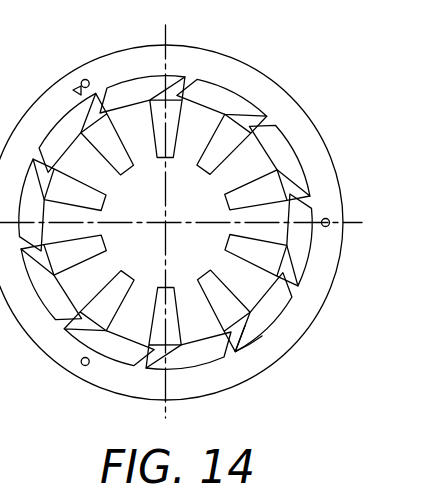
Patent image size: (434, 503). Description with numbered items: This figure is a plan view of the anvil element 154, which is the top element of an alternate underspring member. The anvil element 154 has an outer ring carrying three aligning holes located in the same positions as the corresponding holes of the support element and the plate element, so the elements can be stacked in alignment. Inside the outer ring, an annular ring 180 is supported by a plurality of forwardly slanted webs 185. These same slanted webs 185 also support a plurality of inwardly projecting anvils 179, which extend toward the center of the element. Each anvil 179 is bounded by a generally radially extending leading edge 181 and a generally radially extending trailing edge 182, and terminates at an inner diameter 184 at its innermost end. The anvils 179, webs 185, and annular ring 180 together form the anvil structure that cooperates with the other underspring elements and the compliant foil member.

The anvil element 154 is at (274, 64).
The anvil 179 is at (181, 150).
The annular ring 180 is at (278, 310).
The leading edge 181 is at (114, 171).
The trailing edge 182 is at (134, 153).
The inner diameter 184 is at (210, 277).
The forwardly slanted web 185 is at (247, 343).